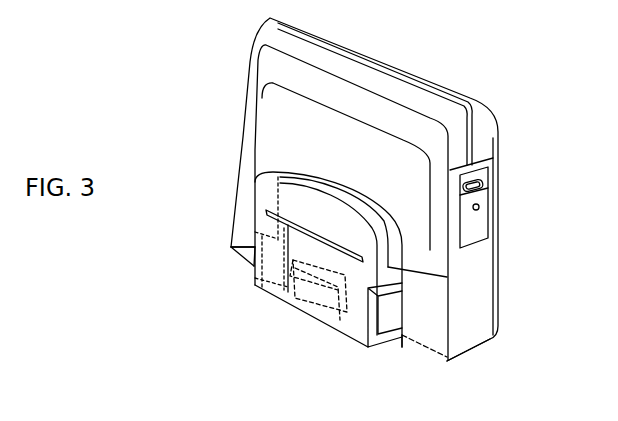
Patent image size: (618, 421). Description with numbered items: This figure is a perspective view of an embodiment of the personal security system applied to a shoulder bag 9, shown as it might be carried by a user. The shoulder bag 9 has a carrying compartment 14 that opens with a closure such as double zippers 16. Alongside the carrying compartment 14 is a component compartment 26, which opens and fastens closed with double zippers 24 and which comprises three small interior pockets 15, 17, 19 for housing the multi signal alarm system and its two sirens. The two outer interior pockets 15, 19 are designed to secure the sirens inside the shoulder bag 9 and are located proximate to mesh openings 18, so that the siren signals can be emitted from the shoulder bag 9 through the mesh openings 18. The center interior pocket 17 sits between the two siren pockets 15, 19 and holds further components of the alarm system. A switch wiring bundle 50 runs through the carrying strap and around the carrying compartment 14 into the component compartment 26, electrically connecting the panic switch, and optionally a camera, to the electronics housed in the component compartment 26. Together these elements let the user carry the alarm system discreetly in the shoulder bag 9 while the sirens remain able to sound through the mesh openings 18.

The shoulder bag 9 is at (250, 68).
The carrying compartment 14 is at (467, 100).
The interior pocket 15 is at (255, 283).
The double zippers 16 is at (423, 80).
The center interior pocket 17 is at (307, 300).
The mesh openings 18 is at (231, 247).
The interior pocket 19 is at (367, 348).
The double zippers 24 is at (447, 277).
The component compartment 26 is at (267, 295).
The switch wiring bundle 50 is at (488, 338).